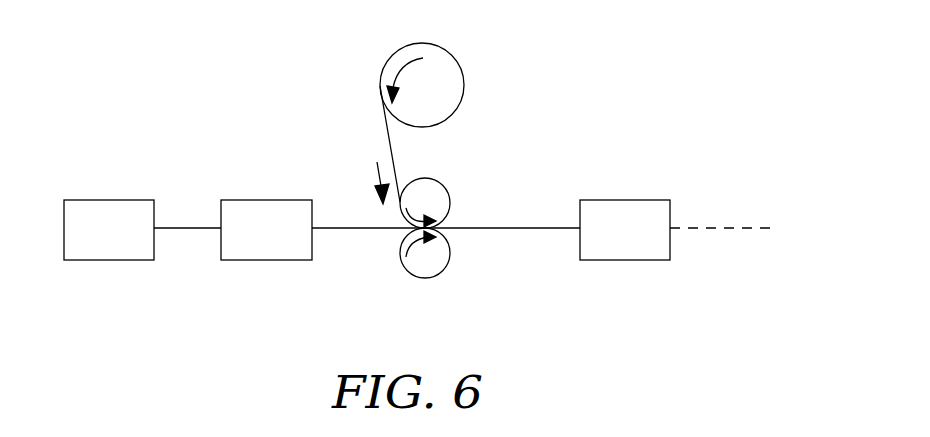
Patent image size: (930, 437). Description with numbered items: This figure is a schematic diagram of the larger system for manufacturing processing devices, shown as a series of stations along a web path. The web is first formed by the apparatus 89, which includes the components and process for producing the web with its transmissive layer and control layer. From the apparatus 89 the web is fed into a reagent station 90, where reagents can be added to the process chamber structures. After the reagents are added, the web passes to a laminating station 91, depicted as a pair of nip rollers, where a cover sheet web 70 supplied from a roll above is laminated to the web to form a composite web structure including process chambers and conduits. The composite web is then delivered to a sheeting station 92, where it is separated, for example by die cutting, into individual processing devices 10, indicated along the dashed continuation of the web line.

The processing device 10 is at (713, 228).
The cover sheet web 70 is at (383, 128).
The apparatus 89 is at (107, 248).
The reagent station 90 is at (268, 247).
The laminating station 91 is at (423, 270).
The sheeting station 92 is at (621, 213).